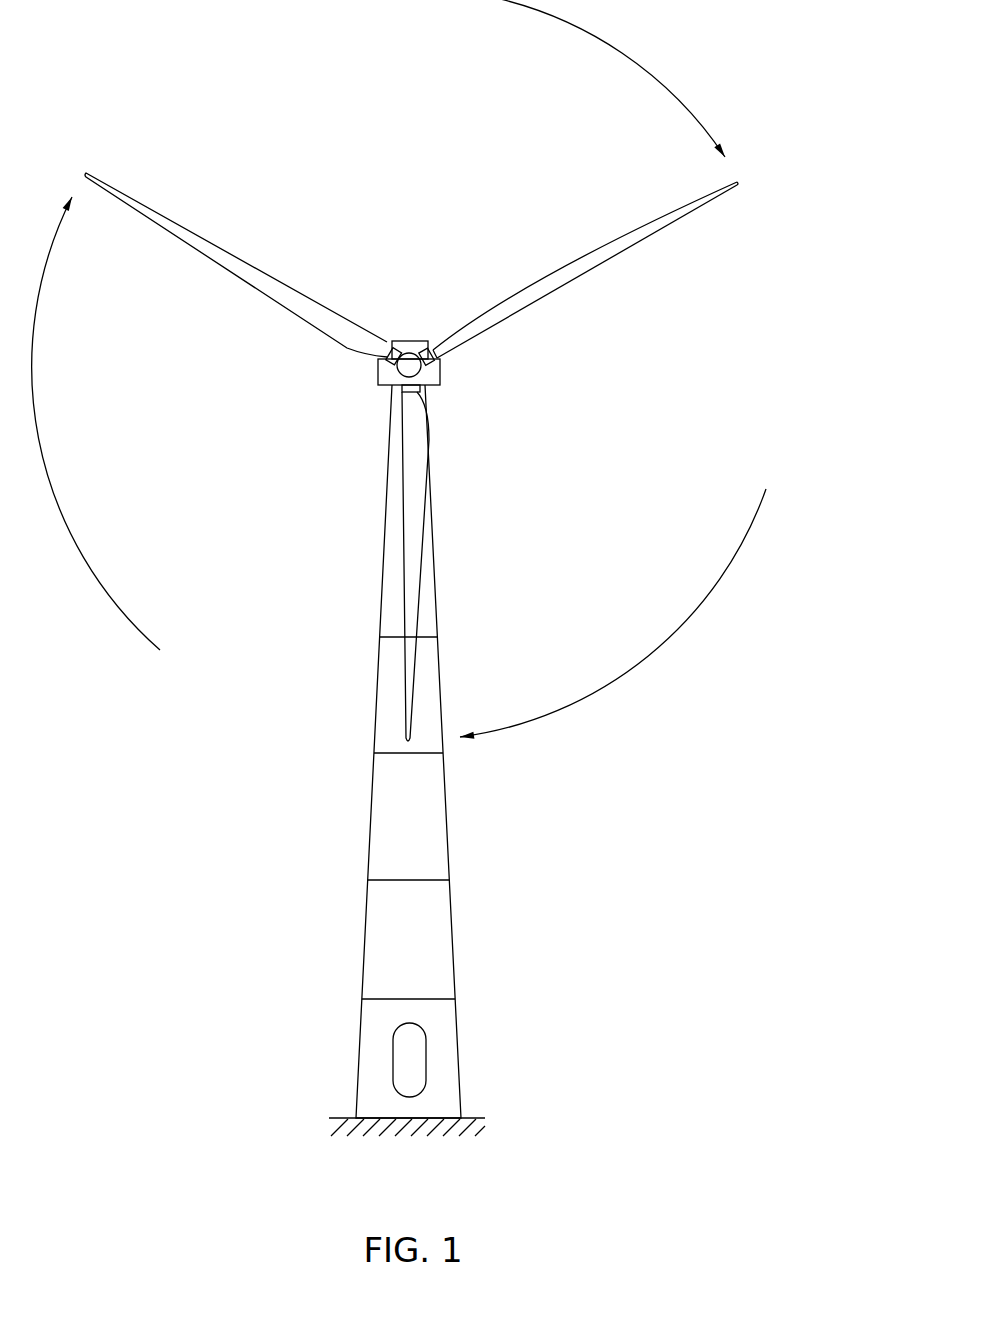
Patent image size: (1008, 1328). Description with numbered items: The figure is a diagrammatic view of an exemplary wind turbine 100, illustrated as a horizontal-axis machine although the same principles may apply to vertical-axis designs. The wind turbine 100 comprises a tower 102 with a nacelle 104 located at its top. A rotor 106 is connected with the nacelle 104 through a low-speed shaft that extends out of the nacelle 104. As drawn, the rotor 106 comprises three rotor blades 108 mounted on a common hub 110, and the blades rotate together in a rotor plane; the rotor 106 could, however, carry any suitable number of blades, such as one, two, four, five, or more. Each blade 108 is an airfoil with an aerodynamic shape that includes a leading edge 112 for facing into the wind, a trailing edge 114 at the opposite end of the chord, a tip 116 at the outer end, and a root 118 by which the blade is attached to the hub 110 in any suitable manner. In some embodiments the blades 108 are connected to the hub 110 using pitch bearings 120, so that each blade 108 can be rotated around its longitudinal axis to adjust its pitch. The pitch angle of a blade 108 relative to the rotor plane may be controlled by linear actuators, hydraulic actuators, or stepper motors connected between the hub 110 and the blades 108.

The wind turbine 100 is at (347, 946).
The tower 102 is at (428, 827).
The nacelle 104 is at (438, 385).
The rotor 106 is at (352, 377).
The rotor blades 108 is at (192, 248).
The hub 110 is at (410, 363).
The leading edge 112 is at (610, 258).
The trailing edge 114 is at (620, 235).
The tip 116 is at (743, 172).
The root 118 is at (456, 364).
The pitch bearings 120 is at (385, 350).